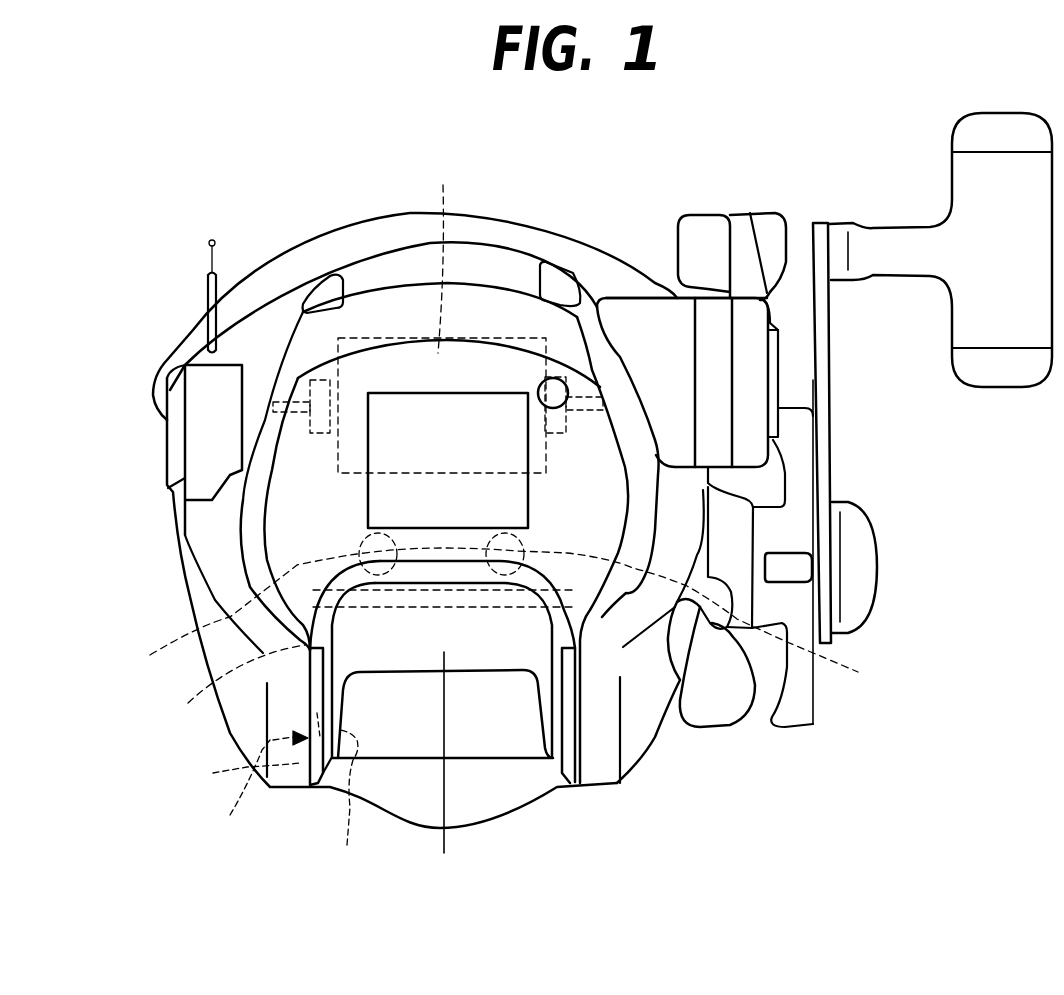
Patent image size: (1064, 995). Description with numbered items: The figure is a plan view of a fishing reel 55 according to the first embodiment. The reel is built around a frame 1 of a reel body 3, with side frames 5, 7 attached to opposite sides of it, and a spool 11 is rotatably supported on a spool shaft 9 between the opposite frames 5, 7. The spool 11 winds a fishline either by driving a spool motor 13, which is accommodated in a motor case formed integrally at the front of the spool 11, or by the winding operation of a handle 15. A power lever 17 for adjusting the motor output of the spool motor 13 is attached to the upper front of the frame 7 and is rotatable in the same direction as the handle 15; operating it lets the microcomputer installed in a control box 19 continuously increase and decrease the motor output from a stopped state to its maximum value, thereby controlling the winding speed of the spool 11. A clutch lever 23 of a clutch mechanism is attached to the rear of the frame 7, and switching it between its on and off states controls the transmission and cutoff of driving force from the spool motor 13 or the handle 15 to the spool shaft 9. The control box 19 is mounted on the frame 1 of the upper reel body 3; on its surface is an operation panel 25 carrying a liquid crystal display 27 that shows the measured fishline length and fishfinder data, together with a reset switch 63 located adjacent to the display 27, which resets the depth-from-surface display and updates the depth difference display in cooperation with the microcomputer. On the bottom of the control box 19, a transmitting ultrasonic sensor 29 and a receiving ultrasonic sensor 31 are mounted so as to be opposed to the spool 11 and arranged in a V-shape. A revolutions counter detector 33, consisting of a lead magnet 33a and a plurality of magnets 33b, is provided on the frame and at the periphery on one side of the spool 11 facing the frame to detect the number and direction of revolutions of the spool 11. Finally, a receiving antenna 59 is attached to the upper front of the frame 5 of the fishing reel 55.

The frame 1 is at (323, 785).
The reel body 3 is at (200, 382).
The frame 5 is at (183, 570).
The frame 7 is at (633, 747).
The spool shaft 9 is at (236, 686).
The spool 11 is at (445, 767).
The spool motor 13 is at (409, 315).
The handle 15 is at (827, 560).
The power lever 17 is at (710, 230).
The control box 19 is at (265, 433).
The clutch lever 23 is at (733, 703).
The operation panel 25 is at (293, 470).
The liquid crystal display 27 is at (499, 417).
The transmitting ultrasonic sensor 29 is at (489, 603).
The receiving ultrasonic sensor 31 is at (602, 672).
The revolutions counter detector 33 is at (245, 762).
The lead magnet 33a is at (237, 793).
The magnet 33b is at (346, 795).
The fishing reel 55 is at (355, 212).
The receiving antenna 59 is at (216, 238).
The reset switch 63 is at (568, 396).